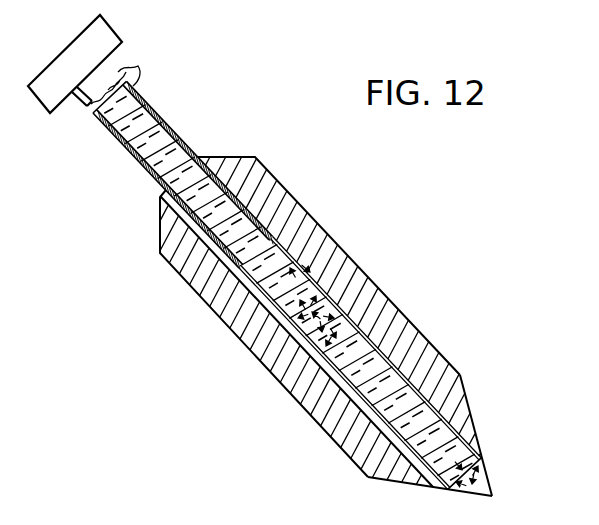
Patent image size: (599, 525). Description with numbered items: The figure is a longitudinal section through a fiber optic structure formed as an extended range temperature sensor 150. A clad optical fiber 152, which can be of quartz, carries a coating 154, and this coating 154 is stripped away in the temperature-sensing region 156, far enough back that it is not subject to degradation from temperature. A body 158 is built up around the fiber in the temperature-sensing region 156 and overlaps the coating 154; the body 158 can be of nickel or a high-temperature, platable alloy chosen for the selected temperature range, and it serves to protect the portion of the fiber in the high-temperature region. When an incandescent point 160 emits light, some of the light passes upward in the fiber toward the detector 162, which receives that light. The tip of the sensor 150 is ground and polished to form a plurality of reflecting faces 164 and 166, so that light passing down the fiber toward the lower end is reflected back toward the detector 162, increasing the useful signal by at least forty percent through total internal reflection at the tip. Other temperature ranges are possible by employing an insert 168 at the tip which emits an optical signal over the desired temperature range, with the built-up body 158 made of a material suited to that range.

The temperature sensor 150 is at (382, 229).
The clad optical fiber 152 is at (321, 285).
The coating 154 is at (147, 173).
The temperature-sensing region 156 is at (305, 348).
The body 158 is at (408, 320).
The incandescent point 160 is at (318, 325).
The detector 162 is at (103, 37).
The reflecting face 164 is at (428, 486).
The reflecting face 166 is at (480, 443).
The insert 168 is at (413, 423).